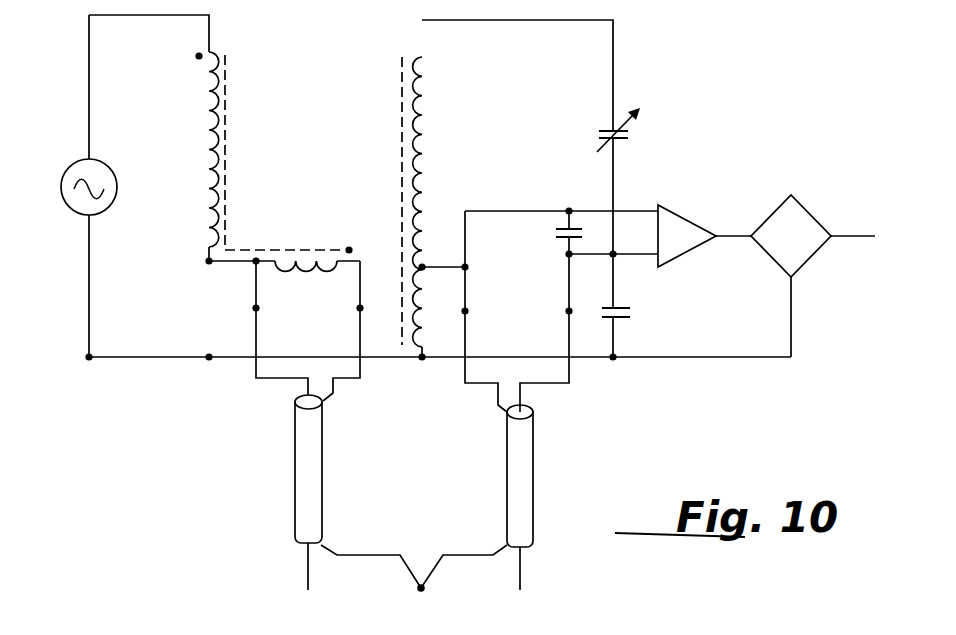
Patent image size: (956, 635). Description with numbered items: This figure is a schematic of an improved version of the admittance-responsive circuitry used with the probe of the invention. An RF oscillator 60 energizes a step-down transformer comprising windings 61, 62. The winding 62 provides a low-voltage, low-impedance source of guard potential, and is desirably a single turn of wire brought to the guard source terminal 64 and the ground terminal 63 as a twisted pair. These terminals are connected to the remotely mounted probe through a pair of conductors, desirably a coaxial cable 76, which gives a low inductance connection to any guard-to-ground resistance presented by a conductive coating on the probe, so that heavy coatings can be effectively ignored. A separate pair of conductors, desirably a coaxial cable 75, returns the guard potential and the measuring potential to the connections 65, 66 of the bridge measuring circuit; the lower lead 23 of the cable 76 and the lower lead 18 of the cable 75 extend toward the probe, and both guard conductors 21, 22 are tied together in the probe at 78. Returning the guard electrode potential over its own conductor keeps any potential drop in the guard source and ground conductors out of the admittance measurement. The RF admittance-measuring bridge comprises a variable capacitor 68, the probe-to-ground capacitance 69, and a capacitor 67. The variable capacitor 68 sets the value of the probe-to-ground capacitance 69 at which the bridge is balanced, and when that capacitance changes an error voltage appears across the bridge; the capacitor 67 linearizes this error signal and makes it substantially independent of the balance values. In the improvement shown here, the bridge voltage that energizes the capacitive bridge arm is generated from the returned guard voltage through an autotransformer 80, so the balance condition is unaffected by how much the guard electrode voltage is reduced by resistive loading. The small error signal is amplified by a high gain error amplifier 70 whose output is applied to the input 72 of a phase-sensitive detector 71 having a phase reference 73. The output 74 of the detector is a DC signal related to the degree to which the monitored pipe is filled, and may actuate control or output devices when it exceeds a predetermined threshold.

The electrode lead 18 is at (522, 580).
The guard conductor 21 is at (372, 553).
The guard conductor 22 is at (463, 553).
The electrode lead 23 is at (305, 578).
The RF oscillator 60 is at (76, 174).
The winding 61 is at (209, 143).
The winding 62 is at (302, 258).
The ground terminal 63 is at (258, 308).
The guard source terminal 64 is at (358, 308).
The connection 65 is at (468, 311).
The connection 66 is at (567, 311).
The capacitor 67 is at (556, 233).
The variable capacitor 68 is at (632, 133).
The probe-to-ground capacitance 69 is at (632, 318).
The high gain error amplifier 70 is at (689, 246).
The phase-sensitive detector 71 is at (805, 226).
The input 72 is at (731, 232).
The phase reference 73 is at (792, 330).
The output 74 is at (862, 243).
The coaxial cable 75 is at (533, 497).
The coaxial cable 76 is at (295, 470).
The common junction 78 is at (418, 591).
The autotransformer 80 is at (418, 147).